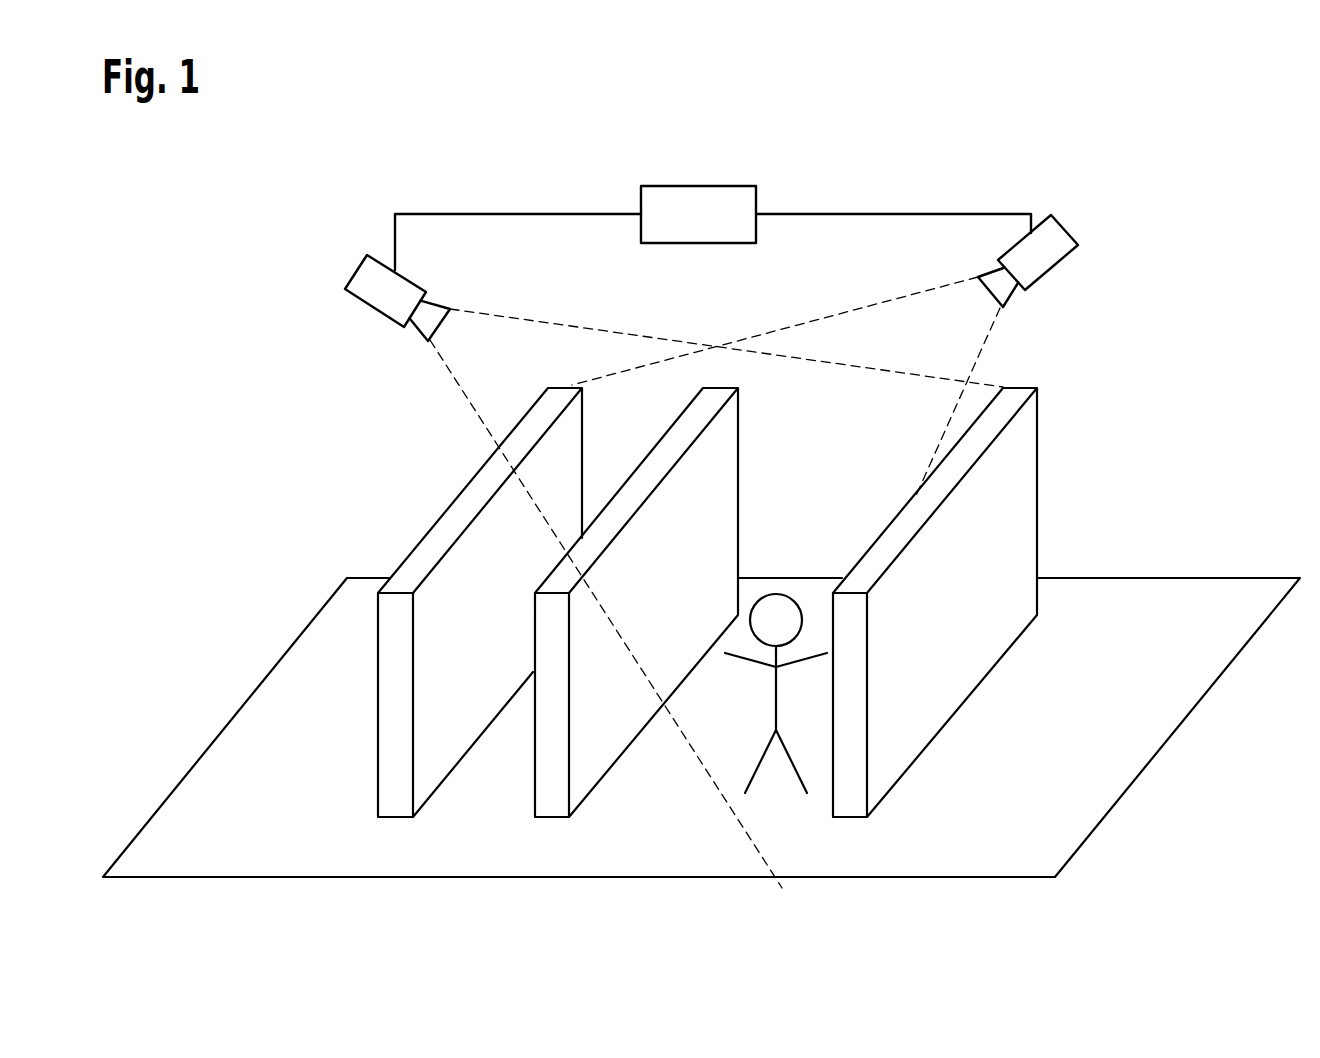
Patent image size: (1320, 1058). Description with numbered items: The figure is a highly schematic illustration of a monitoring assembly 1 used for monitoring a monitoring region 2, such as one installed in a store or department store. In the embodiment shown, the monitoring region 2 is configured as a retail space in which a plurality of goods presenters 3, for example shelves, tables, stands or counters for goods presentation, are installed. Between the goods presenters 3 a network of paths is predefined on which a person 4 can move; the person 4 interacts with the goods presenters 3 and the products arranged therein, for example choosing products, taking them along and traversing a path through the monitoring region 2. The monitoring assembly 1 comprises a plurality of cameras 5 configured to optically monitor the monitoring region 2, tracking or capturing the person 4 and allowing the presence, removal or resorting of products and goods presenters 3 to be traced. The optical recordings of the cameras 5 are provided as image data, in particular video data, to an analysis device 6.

The monitoring assembly 1 is at (1172, 233).
The monitoring region 2 is at (1098, 798).
The goods presenter 3 is at (423, 783).
The person 4 is at (788, 807).
The camera 5 is at (362, 290).
The analysis device 6 is at (695, 230).